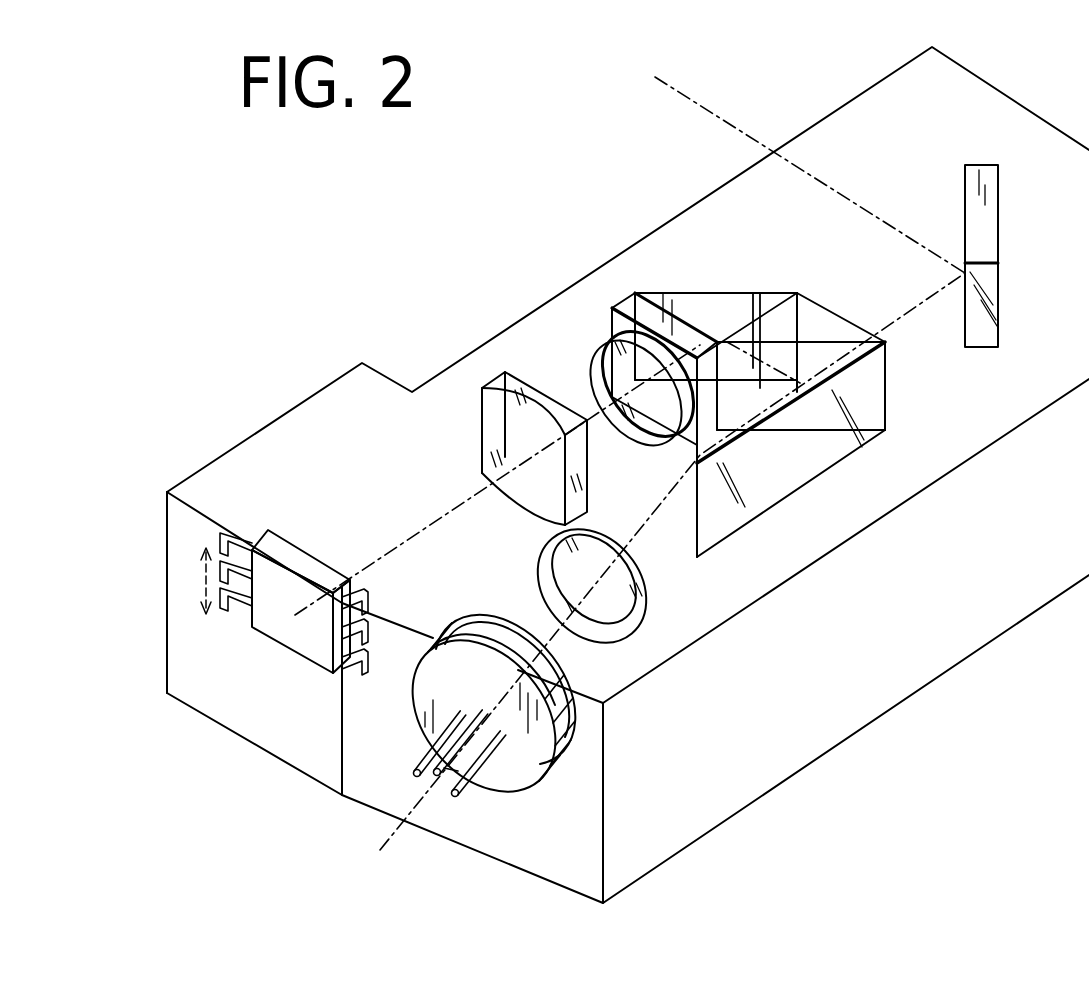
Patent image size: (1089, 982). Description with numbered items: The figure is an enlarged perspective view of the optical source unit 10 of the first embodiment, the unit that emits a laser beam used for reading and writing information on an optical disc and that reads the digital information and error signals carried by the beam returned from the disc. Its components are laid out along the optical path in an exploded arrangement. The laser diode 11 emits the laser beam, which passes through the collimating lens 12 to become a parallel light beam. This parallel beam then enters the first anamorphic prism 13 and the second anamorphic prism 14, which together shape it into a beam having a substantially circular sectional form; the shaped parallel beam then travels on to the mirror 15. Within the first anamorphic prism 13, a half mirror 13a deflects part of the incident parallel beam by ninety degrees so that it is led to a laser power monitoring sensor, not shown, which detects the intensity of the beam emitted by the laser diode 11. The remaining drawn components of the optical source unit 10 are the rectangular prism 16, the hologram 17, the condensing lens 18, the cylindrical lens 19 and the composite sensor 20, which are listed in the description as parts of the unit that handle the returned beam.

The optical source unit 10 is at (982, 733).
The laser diode 11 is at (523, 767).
The collimating lens 12 is at (550, 582).
The first anamorphic prism 13 is at (772, 468).
The half mirror 13a is at (830, 338).
The second anamorphic prism 14 is at (813, 313).
The mirror 15 is at (985, 233).
The rectangular prism 16 is at (712, 305).
The hologram 17 is at (627, 303).
The condensing lens 18 is at (605, 363).
The cylindrical lens 19 is at (490, 438).
The composite sensor 20 is at (307, 638).